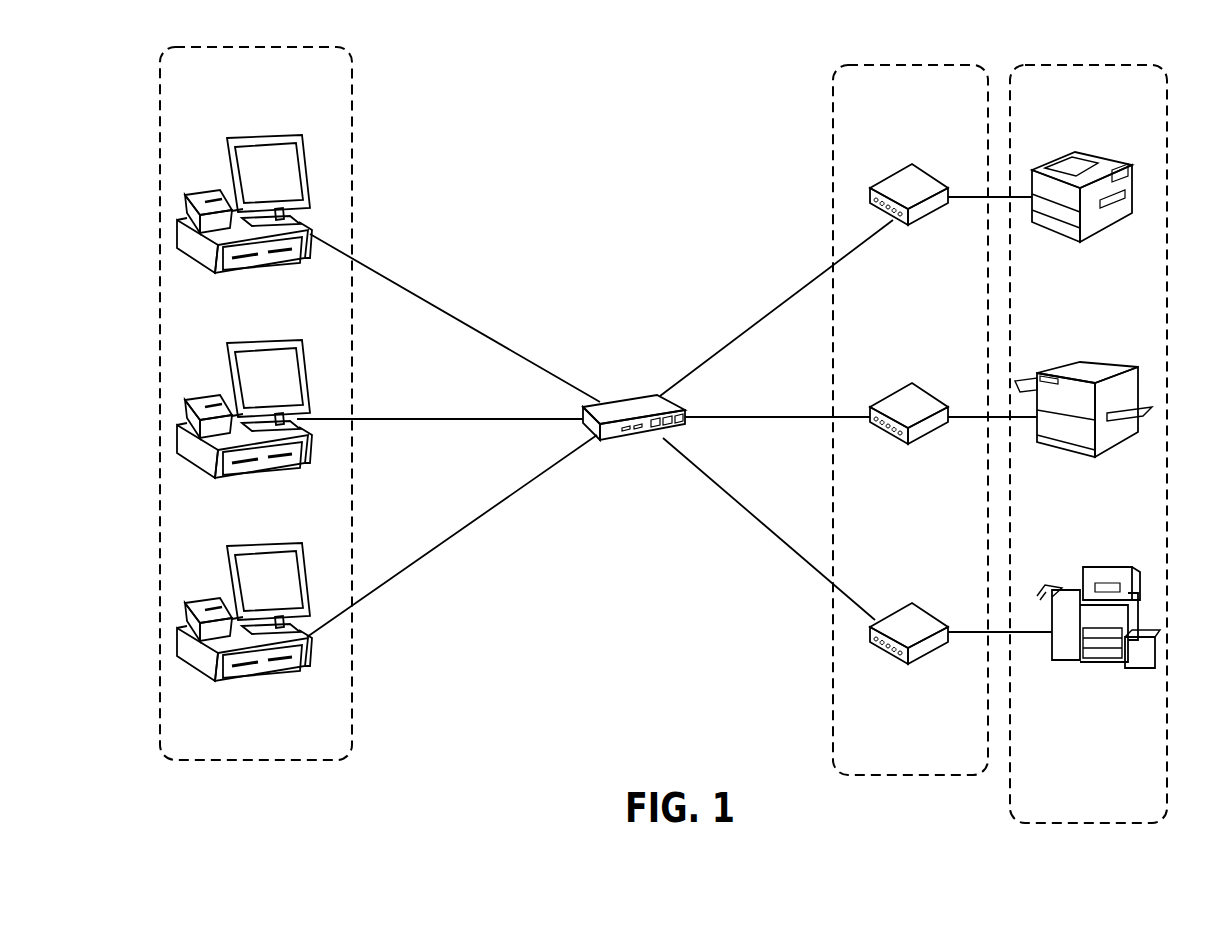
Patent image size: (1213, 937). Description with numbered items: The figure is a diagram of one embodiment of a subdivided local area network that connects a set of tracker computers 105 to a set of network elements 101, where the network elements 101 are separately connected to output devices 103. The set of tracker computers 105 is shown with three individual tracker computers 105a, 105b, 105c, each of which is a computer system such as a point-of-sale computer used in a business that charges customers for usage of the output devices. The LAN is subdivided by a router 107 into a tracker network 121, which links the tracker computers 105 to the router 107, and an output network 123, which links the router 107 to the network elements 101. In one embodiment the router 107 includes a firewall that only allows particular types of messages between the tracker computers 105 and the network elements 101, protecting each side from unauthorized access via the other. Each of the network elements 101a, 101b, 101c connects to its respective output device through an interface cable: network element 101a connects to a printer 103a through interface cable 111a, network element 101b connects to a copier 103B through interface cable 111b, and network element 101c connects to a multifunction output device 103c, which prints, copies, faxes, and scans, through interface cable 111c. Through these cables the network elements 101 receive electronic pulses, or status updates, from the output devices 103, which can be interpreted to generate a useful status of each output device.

The tracker computers 105 is at (277, 125).
The tracker computer 105a is at (278, 268).
The tracker computer 105b is at (278, 470).
The tracker computer 105c is at (278, 675).
The tracker network 121 is at (448, 435).
The router 107 is at (623, 395).
The output network 123 is at (776, 420).
The network elements 101 is at (927, 141).
The network element 101a is at (930, 215).
The network element 101b is at (930, 434).
The network element 101c is at (930, 655).
The interface cable 111a is at (997, 197).
The interface cable 111b is at (1000, 417).
The interface cable 111c is at (1000, 632).
The output devices 103 is at (1102, 141).
The printer 103a is at (1106, 237).
The copier 103B is at (1103, 455).
The multifunction output device 103c is at (1128, 668).